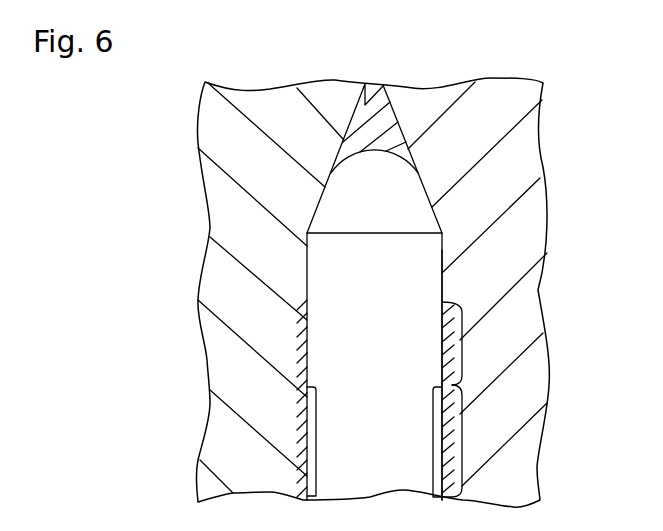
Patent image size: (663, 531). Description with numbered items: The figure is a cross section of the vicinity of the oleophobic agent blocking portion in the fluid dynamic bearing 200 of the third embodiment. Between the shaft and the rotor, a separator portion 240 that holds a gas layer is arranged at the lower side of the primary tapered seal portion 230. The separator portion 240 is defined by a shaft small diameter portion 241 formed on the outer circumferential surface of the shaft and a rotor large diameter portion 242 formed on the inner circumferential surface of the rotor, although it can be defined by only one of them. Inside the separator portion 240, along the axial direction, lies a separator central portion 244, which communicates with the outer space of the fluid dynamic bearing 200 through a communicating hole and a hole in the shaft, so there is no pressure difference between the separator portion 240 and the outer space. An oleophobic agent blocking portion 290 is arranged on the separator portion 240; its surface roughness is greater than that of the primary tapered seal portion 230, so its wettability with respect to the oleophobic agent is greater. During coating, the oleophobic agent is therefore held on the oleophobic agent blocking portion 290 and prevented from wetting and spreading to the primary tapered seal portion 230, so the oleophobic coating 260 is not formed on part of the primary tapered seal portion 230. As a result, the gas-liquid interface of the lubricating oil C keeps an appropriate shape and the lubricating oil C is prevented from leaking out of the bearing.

The fluid dynamic bearing 200 is at (557, 172).
The primary tapered seal portion 230 is at (426, 176).
The lubricating oil C is at (402, 133).
The separator portion 240 is at (338, 252).
The shaft small diameter portion 241 is at (305, 282).
The rotor large diameter portion 242 is at (444, 266).
The oleophobic agent blocking portion 290 is at (464, 341).
The separator central portion 244 is at (464, 430).
The oleophobic coating 260 is at (309, 432).